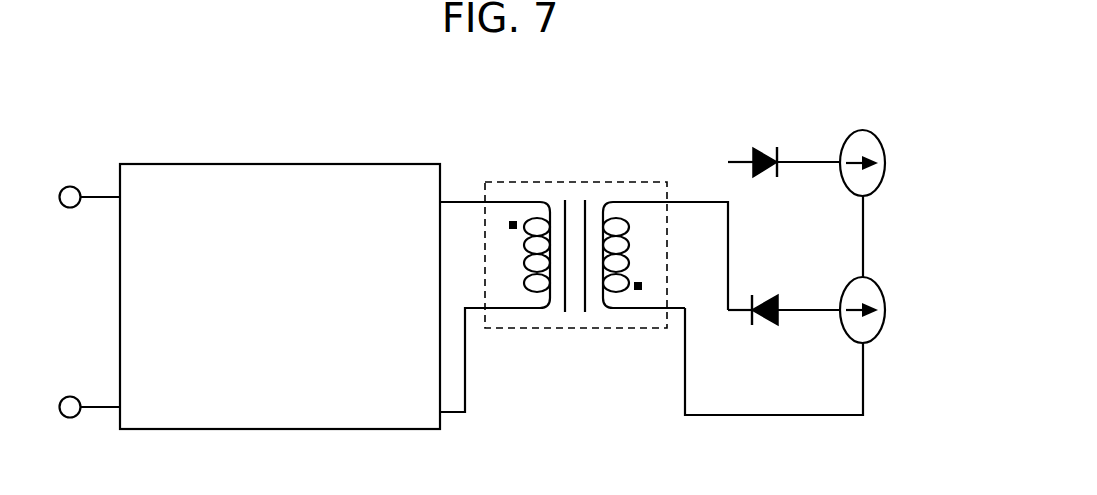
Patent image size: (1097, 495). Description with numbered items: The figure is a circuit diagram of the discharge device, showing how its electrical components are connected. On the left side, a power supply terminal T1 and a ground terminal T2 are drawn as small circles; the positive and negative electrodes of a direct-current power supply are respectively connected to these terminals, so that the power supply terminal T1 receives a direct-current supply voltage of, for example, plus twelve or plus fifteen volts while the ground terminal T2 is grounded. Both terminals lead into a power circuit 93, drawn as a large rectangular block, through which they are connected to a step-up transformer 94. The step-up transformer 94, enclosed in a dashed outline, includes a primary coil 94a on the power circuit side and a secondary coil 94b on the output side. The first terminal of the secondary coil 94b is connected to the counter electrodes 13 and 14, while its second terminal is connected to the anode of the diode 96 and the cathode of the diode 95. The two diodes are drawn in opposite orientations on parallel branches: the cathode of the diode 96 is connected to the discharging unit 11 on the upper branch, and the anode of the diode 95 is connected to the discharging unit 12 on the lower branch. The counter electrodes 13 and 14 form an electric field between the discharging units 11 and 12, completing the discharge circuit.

The power supply terminal T1 is at (70, 186).
The ground terminal T2 is at (70, 418).
The power circuit 93 is at (229, 163).
The step-up transformer 94 is at (585, 214).
The primary coil 94a is at (556, 232).
The secondary coil 94b is at (596, 232).
The diode 96 is at (778, 152).
The diode 95 is at (752, 322).
The discharging unit 11 is at (828, 161).
The discharging unit 12 is at (829, 313).
The counter electrode 13 is at (885, 163).
The counter electrode 14 is at (885, 310).